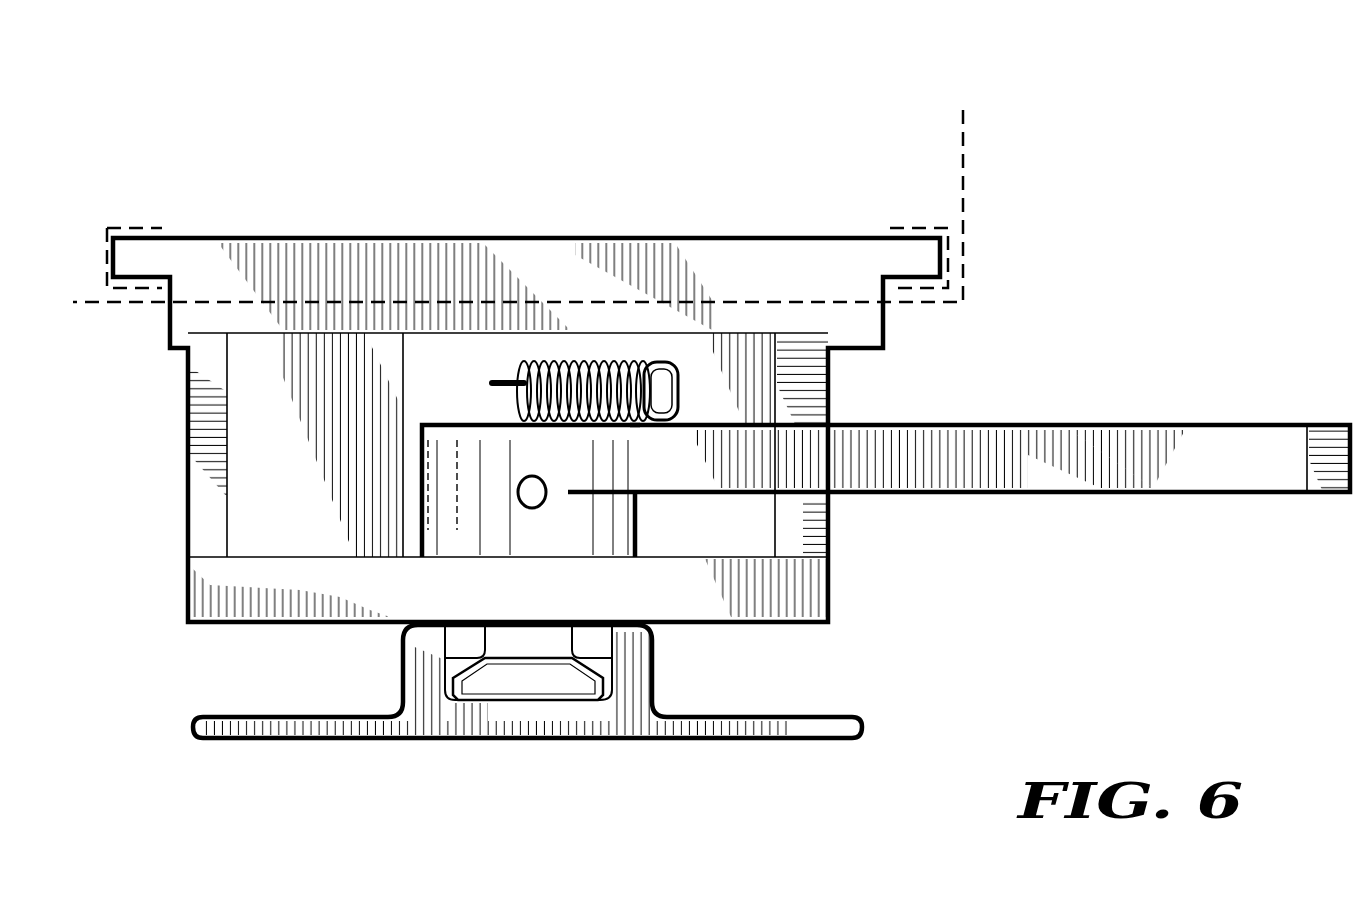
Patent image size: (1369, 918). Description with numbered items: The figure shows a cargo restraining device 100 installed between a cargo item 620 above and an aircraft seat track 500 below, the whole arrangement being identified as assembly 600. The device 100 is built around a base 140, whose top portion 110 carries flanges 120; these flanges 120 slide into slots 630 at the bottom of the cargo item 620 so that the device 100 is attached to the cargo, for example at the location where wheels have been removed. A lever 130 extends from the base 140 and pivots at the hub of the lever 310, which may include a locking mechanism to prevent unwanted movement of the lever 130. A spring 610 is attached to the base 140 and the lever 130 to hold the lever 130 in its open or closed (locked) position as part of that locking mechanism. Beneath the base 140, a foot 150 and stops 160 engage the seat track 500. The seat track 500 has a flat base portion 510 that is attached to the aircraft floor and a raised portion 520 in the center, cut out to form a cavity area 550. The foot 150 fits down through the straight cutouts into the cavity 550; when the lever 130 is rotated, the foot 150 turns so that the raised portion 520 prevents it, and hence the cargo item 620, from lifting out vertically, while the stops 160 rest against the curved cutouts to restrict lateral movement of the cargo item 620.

The cargo restraining device 100 is at (100, 218).
The top portion 110 is at (518, 250).
The flanges 120 is at (923, 257).
The lever 130 is at (1032, 426).
The base 140 is at (188, 447).
The foot 150 is at (610, 690).
The stops 160 is at (530, 634).
The hub of the lever 310 is at (448, 452).
The seat track 500 is at (195, 630).
The flat base portion 510 is at (843, 716).
The raised portion 520 is at (402, 648).
The cavity area 550 is at (447, 685).
The assembly 600 is at (1127, 152).
The spring 610 is at (598, 386).
The cargo item 620 is at (963, 140).
The slots 630 is at (135, 228).